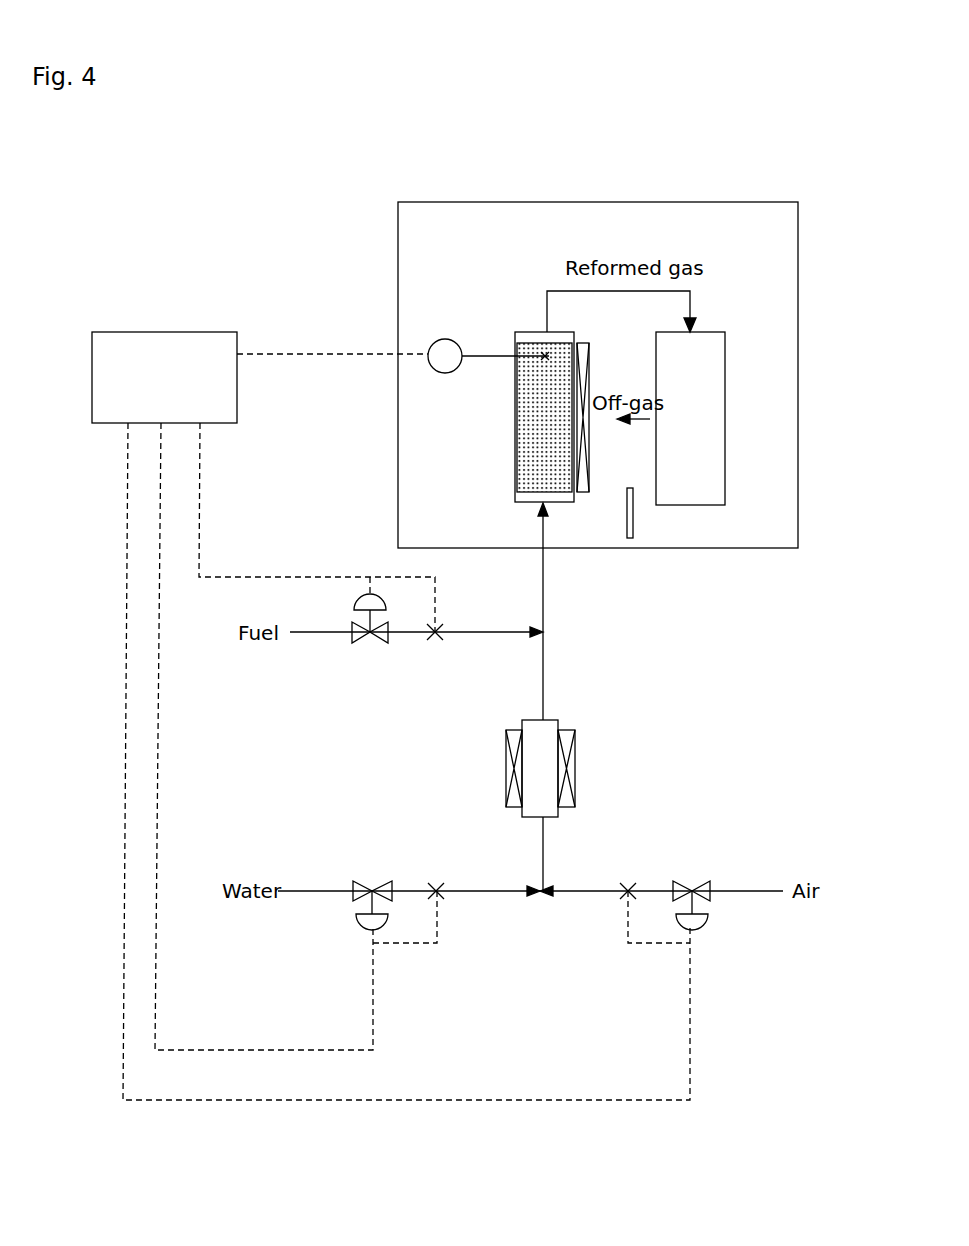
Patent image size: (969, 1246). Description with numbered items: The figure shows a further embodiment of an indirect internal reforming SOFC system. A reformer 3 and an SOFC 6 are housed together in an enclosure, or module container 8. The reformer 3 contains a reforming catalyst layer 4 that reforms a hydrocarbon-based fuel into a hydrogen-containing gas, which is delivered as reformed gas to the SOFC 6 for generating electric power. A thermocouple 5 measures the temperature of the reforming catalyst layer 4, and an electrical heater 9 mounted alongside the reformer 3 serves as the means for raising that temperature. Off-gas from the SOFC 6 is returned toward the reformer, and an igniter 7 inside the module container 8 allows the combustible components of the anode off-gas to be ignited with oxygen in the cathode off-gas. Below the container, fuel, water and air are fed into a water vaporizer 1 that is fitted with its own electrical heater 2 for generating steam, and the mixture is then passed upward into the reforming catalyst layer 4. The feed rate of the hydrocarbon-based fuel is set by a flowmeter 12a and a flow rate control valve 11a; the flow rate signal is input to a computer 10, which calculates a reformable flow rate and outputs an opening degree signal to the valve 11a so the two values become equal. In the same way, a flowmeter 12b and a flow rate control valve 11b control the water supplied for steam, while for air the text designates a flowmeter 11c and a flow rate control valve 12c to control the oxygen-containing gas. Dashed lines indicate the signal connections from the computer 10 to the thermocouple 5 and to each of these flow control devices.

The water vaporizer 1 is at (560, 718).
The electrical heater 2 is at (577, 773).
The reformer 3 is at (513, 332).
The reforming catalyst layer 4 is at (533, 437).
The thermocouple 5 is at (440, 372).
The SOFC 6 is at (733, 337).
The igniter 7 is at (635, 530).
The enclosure (module container) 8 is at (769, 551).
The electrical heater 9 is at (592, 350).
The computer 10 is at (170, 325).
The flow rate control valve 11a is at (368, 647).
The flowmeter 12a is at (435, 647).
The flow rate control valve 11b is at (372, 882).
The flowmeter 12b is at (436, 882).
The flow rate control valve 12c is at (628, 882).
The flowmeter 11c is at (692, 882).